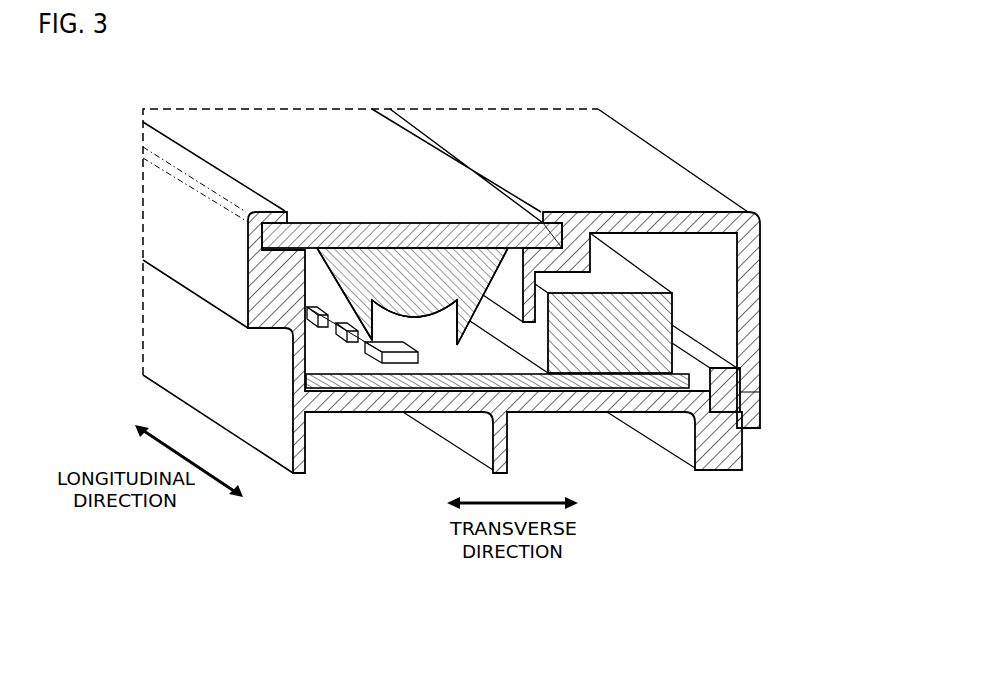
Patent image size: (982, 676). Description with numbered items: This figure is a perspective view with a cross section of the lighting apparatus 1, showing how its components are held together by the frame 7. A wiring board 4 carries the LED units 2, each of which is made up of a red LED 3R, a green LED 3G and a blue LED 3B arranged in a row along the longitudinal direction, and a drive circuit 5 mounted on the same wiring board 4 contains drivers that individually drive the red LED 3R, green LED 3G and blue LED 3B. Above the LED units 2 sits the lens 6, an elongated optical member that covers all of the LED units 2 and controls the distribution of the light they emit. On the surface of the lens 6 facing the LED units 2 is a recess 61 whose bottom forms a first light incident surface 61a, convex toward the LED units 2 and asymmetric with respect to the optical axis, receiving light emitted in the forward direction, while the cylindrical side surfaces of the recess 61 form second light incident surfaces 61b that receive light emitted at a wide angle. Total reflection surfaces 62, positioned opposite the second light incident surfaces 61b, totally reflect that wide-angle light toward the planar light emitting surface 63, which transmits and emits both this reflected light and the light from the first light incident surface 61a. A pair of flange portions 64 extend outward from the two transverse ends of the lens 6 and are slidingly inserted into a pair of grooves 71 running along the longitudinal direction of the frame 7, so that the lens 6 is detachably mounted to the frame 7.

The lighting apparatus 1 is at (426, 78).
The LED unit 2 is at (221, 335).
The red LED 3R is at (315, 318).
The green LED 3G is at (343, 338).
The blue LED 3B is at (350, 357).
The wiring board 4 is at (575, 389).
The drive circuit 5 is at (622, 279).
The lens 6 is at (287, 117).
The frame 7 is at (680, 171).
The recess 61 is at (428, 318).
The first light incident surface 61a is at (420, 313).
The second light incident surface 61b is at (358, 306).
The total reflection surface 62 is at (330, 263).
The light emitting surface 63 is at (402, 223).
The flange portion 64 is at (297, 238).
The groove 71 is at (262, 237).